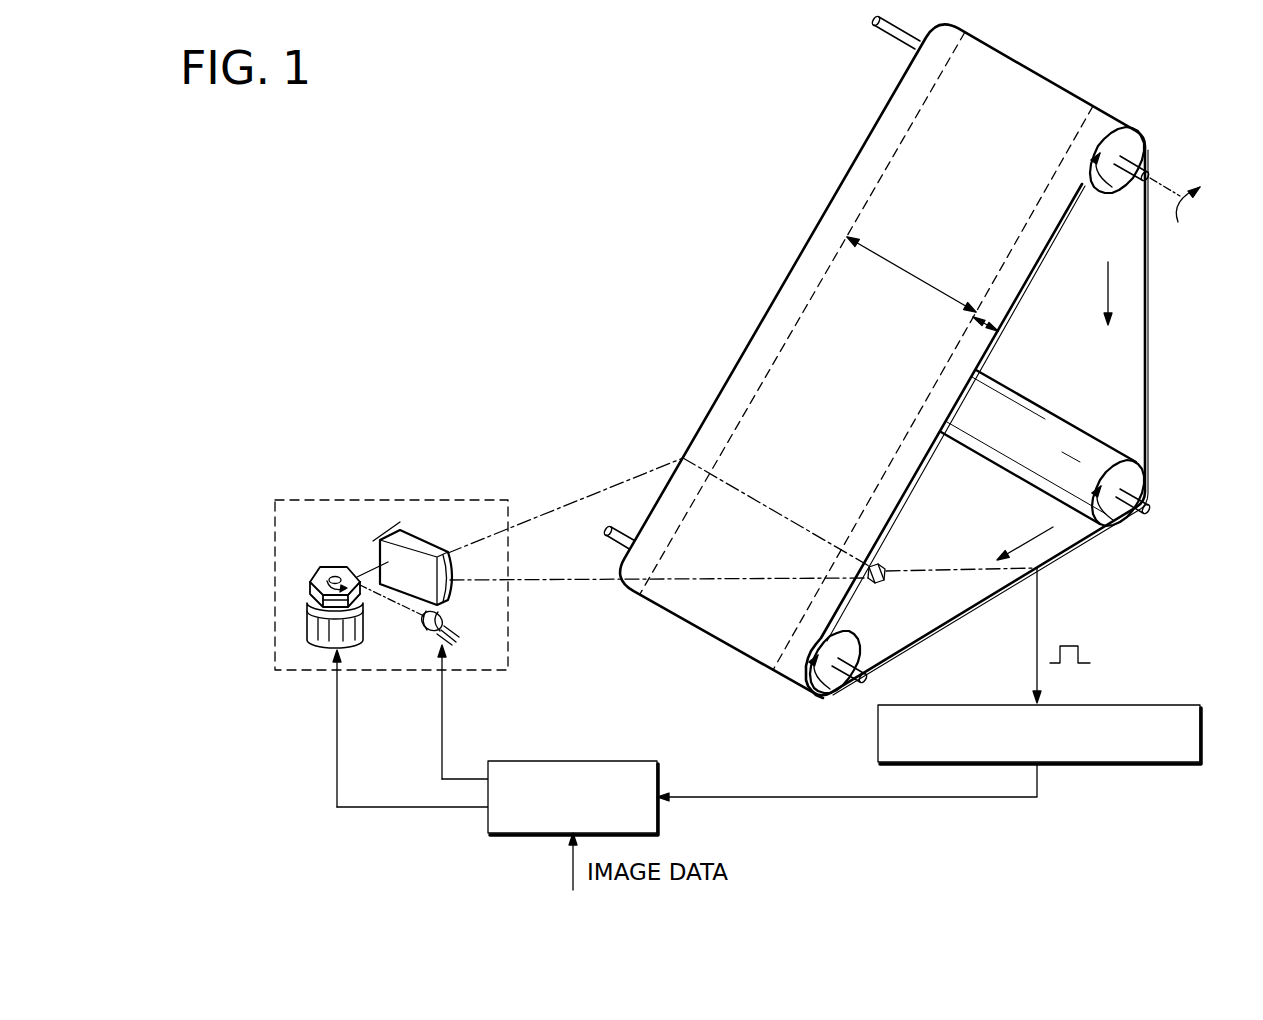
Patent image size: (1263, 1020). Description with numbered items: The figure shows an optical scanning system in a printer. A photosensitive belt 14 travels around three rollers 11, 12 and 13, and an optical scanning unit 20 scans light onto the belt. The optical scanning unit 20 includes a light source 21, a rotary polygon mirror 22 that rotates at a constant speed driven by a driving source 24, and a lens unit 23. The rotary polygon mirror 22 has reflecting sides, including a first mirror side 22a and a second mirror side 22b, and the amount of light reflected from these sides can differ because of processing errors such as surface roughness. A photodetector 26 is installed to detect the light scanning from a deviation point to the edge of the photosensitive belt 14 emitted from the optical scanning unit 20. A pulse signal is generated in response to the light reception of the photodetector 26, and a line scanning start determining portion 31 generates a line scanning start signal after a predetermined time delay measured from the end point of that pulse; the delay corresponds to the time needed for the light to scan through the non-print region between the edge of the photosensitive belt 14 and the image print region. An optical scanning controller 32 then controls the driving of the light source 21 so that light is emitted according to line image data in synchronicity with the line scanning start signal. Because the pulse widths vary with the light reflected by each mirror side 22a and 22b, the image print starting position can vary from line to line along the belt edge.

The roller 11 is at (1141, 147).
The roller 12 is at (1120, 527).
The roller 13 is at (860, 634).
The photosensitive belt 14 is at (1150, 380).
The optical scanning unit 20 is at (313, 500).
The light source 21 is at (455, 624).
The rotary polygon mirror 22 is at (310, 581).
The first mirror side 22a is at (357, 593).
The second mirror side 22b is at (333, 601).
The lens unit 23 is at (386, 526).
The driving source 24 is at (307, 621).
The photodetector 26 is at (882, 567).
The line scanning start determining portion 31 is at (1203, 725).
The optical scanning controller 32 is at (567, 761).